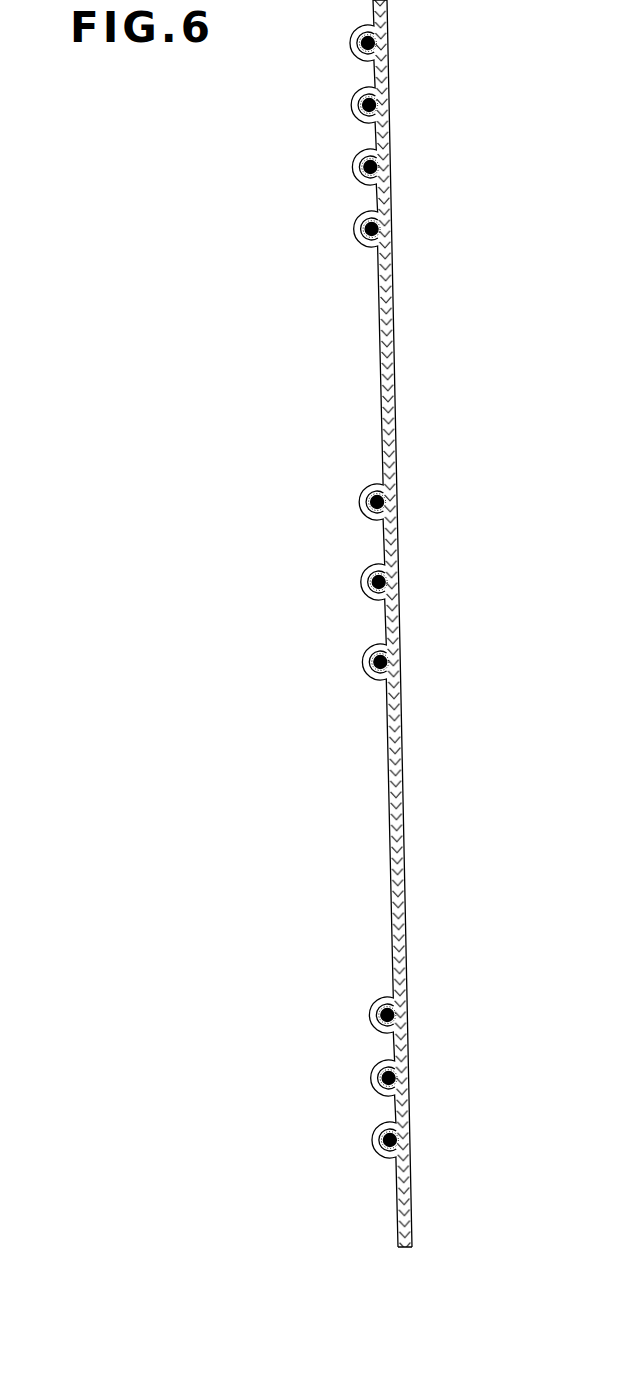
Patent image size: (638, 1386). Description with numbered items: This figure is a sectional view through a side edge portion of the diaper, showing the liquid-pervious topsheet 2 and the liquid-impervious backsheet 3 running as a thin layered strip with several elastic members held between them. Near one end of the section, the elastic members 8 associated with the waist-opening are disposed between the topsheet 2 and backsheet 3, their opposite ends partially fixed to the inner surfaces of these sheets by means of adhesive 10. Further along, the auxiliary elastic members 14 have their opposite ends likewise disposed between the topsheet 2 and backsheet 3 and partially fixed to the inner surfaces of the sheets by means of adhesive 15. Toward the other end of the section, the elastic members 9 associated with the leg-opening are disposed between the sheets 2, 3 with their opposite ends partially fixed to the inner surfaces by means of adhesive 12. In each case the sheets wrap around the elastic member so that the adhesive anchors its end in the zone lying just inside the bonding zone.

The topsheet 2 is at (380, 320).
The backsheet 3 is at (395, 371).
The elastic members 8 is at (354, 215).
The adhesive 10 is at (380, 225).
The auxiliary elastic members 14 is at (369, 645).
The adhesive 15 is at (390, 658).
The elastic members 9 is at (373, 1128).
The adhesive 12 is at (396, 1138).